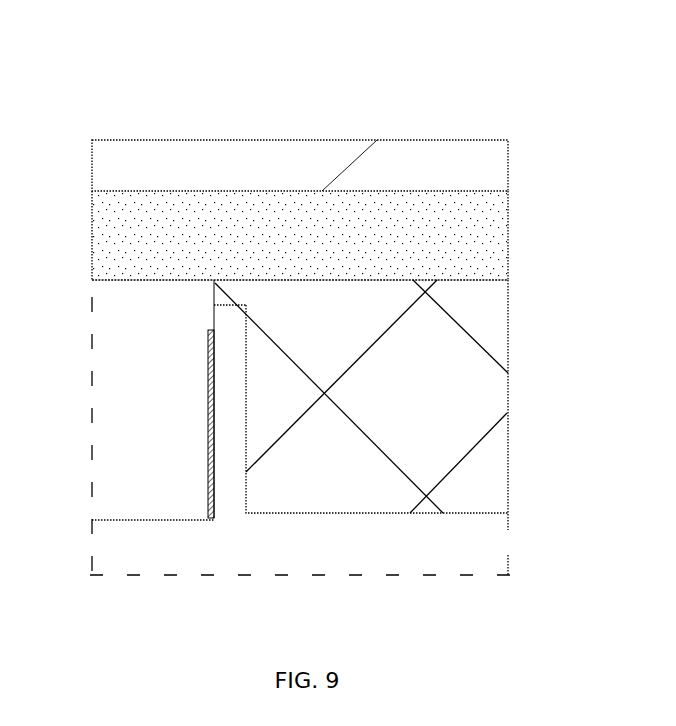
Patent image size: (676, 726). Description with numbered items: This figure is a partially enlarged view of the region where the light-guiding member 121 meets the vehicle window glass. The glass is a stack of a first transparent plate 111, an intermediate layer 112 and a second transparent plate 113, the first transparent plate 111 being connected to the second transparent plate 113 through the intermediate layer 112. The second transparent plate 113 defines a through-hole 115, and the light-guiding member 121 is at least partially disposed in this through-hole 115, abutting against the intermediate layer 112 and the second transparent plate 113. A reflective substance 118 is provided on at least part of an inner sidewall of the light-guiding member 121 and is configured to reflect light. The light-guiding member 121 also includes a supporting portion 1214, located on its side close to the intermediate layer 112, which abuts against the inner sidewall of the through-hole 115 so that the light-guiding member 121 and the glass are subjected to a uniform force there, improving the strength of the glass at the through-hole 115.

The first transparent plate 111 is at (440, 173).
The intermediate layer 112 is at (478, 238).
The second transparent plate 113 is at (106, 383).
The through-hole 115 is at (230, 473).
The reflective substance 118 is at (215, 395).
The light-guiding member 121 is at (303, 310).
The supporting portion 1214 is at (227, 290).